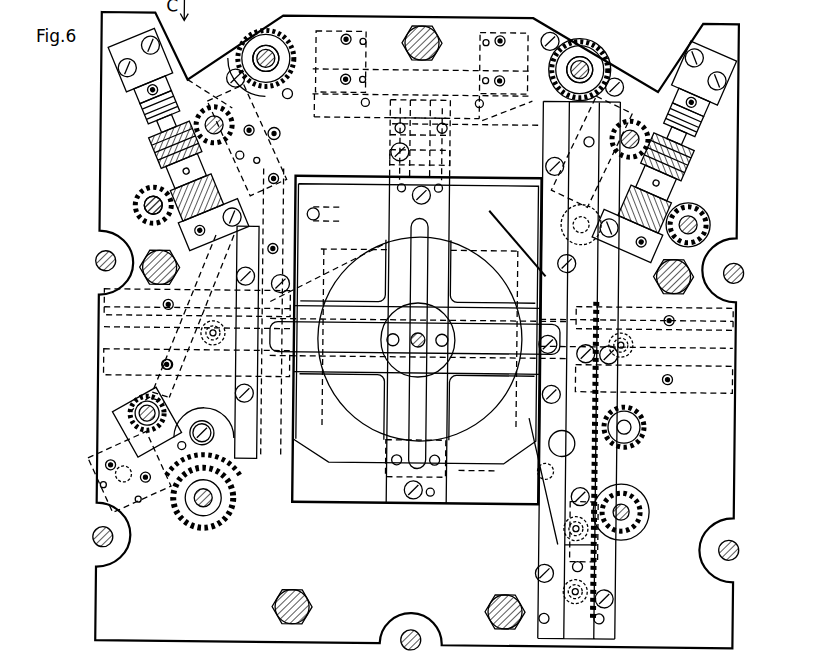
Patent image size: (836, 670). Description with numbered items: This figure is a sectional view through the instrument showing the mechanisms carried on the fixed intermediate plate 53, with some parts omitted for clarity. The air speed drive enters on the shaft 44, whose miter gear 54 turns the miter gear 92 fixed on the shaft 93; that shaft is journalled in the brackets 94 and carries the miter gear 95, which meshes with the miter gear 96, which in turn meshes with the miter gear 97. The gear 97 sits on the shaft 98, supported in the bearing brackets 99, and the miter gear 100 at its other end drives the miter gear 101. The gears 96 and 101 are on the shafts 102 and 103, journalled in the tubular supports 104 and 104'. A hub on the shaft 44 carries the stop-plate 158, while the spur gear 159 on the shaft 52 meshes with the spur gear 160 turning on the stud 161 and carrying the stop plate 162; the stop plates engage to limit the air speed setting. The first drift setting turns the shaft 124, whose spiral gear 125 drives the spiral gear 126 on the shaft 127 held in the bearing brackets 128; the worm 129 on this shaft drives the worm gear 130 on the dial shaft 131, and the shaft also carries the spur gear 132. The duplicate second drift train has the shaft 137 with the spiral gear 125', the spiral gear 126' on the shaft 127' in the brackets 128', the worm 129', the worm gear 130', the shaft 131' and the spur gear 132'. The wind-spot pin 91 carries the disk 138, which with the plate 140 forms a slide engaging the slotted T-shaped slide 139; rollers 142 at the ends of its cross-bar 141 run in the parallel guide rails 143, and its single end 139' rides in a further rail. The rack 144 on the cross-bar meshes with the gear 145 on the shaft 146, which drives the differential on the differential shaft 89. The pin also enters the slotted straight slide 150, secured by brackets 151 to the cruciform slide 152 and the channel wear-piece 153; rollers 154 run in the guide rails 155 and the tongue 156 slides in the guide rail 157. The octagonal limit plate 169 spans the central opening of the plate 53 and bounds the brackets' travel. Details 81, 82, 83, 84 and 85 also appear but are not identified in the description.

The intermediate plate 53 is at (108, 591).
The frame 82 is at (325, 205).
The frame plate 83 is at (485, 210).
The slotted slide 139 is at (329, 338).
The single end of the T-shaped slide 139' is at (328, 246).
The plate 140 is at (365, 340).
The disk 138 is at (448, 318).
The slotted straight slide 150 is at (385, 418).
The wind-spot pin 91 is at (430, 325).
The brackets 151 is at (440, 430).
The screw 81 is at (440, 212).
The tongue 156 is at (400, 112).
The cruciform slide 152 is at (386, 148).
The channel 153 is at (445, 166).
The guide rail 157 is at (480, 125).
The octagonal limit plate 169 is at (476, 480).
The shaft 98 is at (382, 55).
The bearing brackets 99 is at (363, 83).
The guide rails 143 is at (590, 620).
The guide rails 155 is at (104, 352).
The rollers 154 is at (200, 340).
The shaft 93 is at (185, 325).
The spiral gear 126 is at (255, 313).
The miter gear 95 is at (294, 106).
The brackets 94 is at (280, 136).
The shaft 131 is at (262, 140).
The bearing brackets 128 is at (116, 135).
The spur gear 132 is at (120, 112).
The shaft 127 is at (154, 144).
The worm 129 is at (177, 198).
The worm gear 130 is at (213, 105).
The spiral gear 125 is at (116, 199).
The shaft 124 is at (143, 210).
The bearing brackets 128' is at (727, 154).
The spur gear 132' is at (724, 128).
The shaft 127' is at (690, 157).
The worm 129' is at (665, 210).
The worm gear 130' is at (639, 120).
The spiral gear 125' is at (725, 226).
The shaft 137 is at (710, 215).
The shaft 131' is at (591, 152).
The spiral gear 126' is at (580, 173).
The miter gear 97 is at (263, 33).
The shaft 102 is at (260, 40).
The miter gear 96 is at (252, 52).
The tubular support 104 is at (205, 74).
The miter gear 100 is at (580, 41).
The shaft 103 is at (590, 45).
The miter gear 101 is at (592, 62).
The tubular support 104' is at (639, 73).
The cross-bar 141 is at (572, 240).
The rollers 142 is at (603, 250).
The rack 144 is at (632, 395).
The shaft 146 is at (650, 423).
The gear 145 is at (645, 440).
The differential shaft 89 is at (650, 505).
The gear 85 is at (645, 528).
The bracket 84 is at (605, 555).
The shaft 44 is at (128, 418).
The miter gear 92 is at (140, 392).
The miter gear 54 is at (125, 432).
The stop-plate 158 is at (110, 448).
The spur gear 160 is at (225, 458).
The stud 161 is at (222, 445).
The stop plate 162 is at (225, 475).
The spur gear 159 is at (232, 522).
The shaft 52 is at (216, 500).